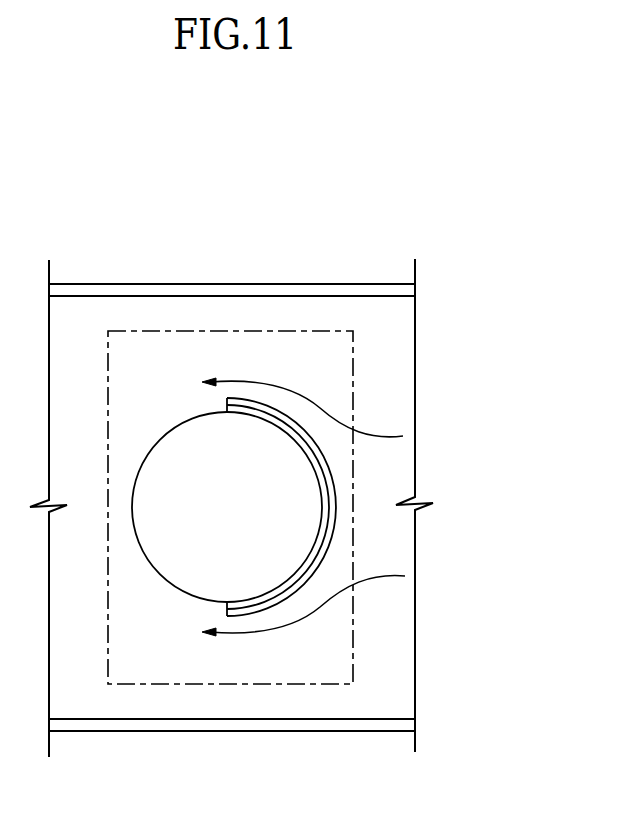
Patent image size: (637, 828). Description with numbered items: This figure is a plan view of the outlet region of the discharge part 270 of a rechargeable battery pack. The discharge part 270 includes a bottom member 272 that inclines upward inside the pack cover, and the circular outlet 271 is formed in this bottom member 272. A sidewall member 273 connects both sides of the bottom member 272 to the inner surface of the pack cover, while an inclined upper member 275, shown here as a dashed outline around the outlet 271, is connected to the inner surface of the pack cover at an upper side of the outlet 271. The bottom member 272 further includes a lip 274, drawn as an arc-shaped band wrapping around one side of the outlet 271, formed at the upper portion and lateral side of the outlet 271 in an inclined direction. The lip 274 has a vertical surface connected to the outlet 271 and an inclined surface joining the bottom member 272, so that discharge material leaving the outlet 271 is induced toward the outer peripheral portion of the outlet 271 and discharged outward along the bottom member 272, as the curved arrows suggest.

The discharge part 270 is at (208, 213).
The outlet 271 is at (246, 515).
The bottom member 272 is at (387, 616).
The sidewall member 273 is at (335, 293).
The lip 274 is at (325, 480).
The inclined upper member 275 is at (353, 378).